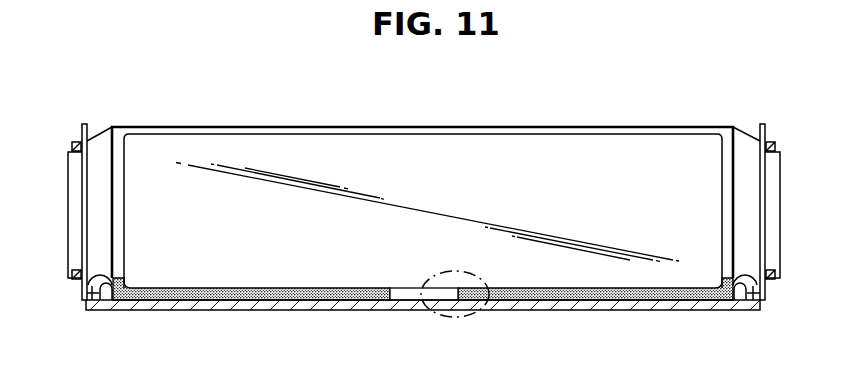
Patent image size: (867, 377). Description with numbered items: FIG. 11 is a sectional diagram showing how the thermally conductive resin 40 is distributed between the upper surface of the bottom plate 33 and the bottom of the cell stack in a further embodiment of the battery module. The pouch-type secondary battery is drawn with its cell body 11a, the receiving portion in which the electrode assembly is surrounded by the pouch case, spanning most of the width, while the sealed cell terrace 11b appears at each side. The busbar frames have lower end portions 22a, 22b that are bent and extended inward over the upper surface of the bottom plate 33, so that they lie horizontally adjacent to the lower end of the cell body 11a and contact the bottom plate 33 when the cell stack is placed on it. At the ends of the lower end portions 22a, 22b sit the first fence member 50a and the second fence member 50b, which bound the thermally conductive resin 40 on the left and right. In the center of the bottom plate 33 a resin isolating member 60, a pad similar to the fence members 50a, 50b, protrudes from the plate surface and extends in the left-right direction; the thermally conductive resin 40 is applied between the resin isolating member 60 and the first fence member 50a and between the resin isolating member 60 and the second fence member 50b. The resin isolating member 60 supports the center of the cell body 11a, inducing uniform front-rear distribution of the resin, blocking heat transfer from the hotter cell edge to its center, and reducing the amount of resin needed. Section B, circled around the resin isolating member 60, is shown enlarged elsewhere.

The cell body 11a is at (580, 147).
The cell terrace 11b is at (100, 147).
The lower end portion of the first busbar frame 22a is at (92, 295).
The lower end portion of the second busbar frame 22b is at (755, 293).
The bottom plate 33 is at (677, 312).
The thermally conductive resin 40 is at (280, 295).
The first fence member 50a is at (107, 299).
The second fence member 50b is at (738, 298).
The resin isolating member 60 is at (408, 293).
The section B is at (457, 317).